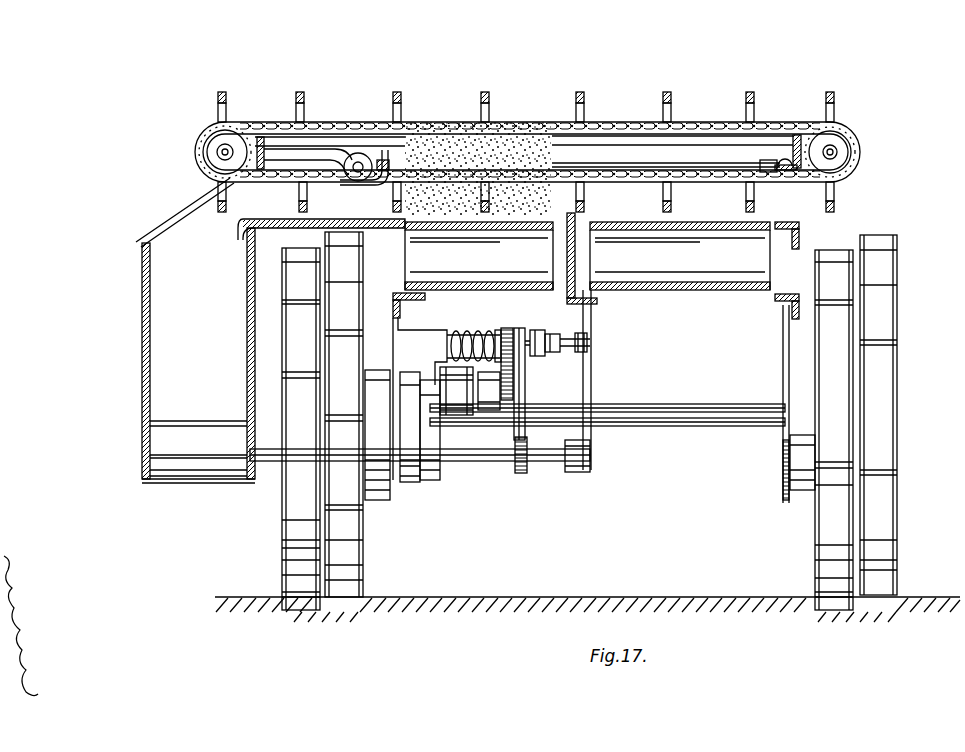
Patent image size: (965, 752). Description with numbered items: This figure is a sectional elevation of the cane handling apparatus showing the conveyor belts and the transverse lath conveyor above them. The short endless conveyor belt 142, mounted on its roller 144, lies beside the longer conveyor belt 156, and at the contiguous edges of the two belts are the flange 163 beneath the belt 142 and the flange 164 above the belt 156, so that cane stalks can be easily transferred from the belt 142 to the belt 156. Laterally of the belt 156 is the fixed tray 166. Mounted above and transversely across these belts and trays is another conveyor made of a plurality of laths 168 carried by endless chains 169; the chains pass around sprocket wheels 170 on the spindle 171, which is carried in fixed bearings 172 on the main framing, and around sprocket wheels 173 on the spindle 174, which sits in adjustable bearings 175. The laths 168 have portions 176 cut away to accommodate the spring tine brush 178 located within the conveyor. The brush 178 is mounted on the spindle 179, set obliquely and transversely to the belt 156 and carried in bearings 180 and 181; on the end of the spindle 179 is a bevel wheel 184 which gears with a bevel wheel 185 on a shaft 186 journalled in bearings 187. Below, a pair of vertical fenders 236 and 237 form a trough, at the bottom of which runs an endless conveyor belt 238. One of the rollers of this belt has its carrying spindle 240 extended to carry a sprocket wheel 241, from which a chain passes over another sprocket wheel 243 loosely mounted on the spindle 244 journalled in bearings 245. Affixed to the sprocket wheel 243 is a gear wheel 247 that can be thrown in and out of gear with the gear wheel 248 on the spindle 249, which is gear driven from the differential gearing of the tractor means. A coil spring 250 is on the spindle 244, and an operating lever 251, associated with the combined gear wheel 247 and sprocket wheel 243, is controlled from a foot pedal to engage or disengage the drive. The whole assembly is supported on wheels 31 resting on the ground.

The wheels 31 is at (302, 525).
The short endless conveyor belt 142 is at (727, 218).
The roller 144 is at (715, 252).
The conveyor belt 156 is at (423, 229).
The flange 163 is at (593, 232).
The flange 164 is at (552, 230).
The fixed tray 166 is at (360, 223).
The laths 168 is at (660, 92).
The endless chains 169 is at (693, 120).
The sprocket wheels 170 is at (216, 140).
The spindle 171 is at (220, 157).
The fixed bearings 172 is at (250, 146).
The sprocket wheels 173 is at (842, 163).
The spindle 174 is at (838, 149).
The adjustable bearings 175 is at (806, 124).
The cut-away portions 176 is at (573, 112).
The spring tine brush 178 is at (470, 133).
The spindle 179 is at (640, 167).
The bearing 180 is at (372, 150).
The bearing 181 is at (780, 162).
The bevel wheel 184 is at (383, 157).
The bevel wheel 185 is at (345, 160).
The shaft 186 is at (318, 183).
The bearings 187 is at (362, 175).
The vertical fender 236 is at (244, 318).
The vertical fender 237 is at (141, 358).
The endless conveyor belt 238 is at (197, 453).
The carrying spindle 240 is at (435, 465).
The sprocket wheel 241 is at (525, 475).
The sprocket wheel 243 is at (525, 330).
The spindle 244 is at (568, 331).
The bearings 245 is at (442, 346).
The gear wheel 247 is at (505, 328).
The gear wheel 248 is at (510, 427).
The spindle 249 is at (489, 406).
The coil spring 250 is at (462, 328).
The operating lever 251 is at (553, 353).